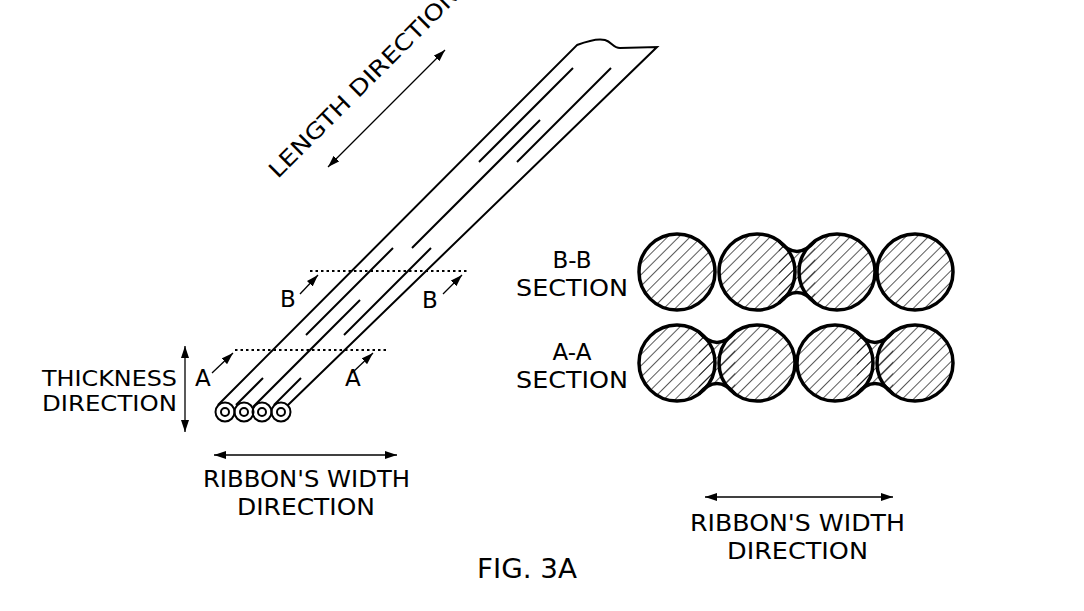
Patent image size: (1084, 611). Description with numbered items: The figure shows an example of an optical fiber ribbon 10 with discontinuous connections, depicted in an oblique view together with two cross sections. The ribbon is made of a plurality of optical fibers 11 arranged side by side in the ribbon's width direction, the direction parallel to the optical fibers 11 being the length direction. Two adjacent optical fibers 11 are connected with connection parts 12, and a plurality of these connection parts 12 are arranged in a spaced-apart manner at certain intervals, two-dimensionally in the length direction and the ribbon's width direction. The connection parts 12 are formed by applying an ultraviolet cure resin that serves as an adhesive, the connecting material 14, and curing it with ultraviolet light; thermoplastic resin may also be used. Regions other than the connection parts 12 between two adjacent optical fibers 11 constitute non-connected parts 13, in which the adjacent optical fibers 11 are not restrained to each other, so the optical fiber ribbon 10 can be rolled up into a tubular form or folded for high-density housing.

The optical fiber ribbon with discontinuous connections 10 is at (246, 250).
The optical fiber 11 is at (272, 383).
The connection part 12 is at (342, 333).
The non-connected part 13 is at (414, 230).
The connecting material 14 is at (651, 246).